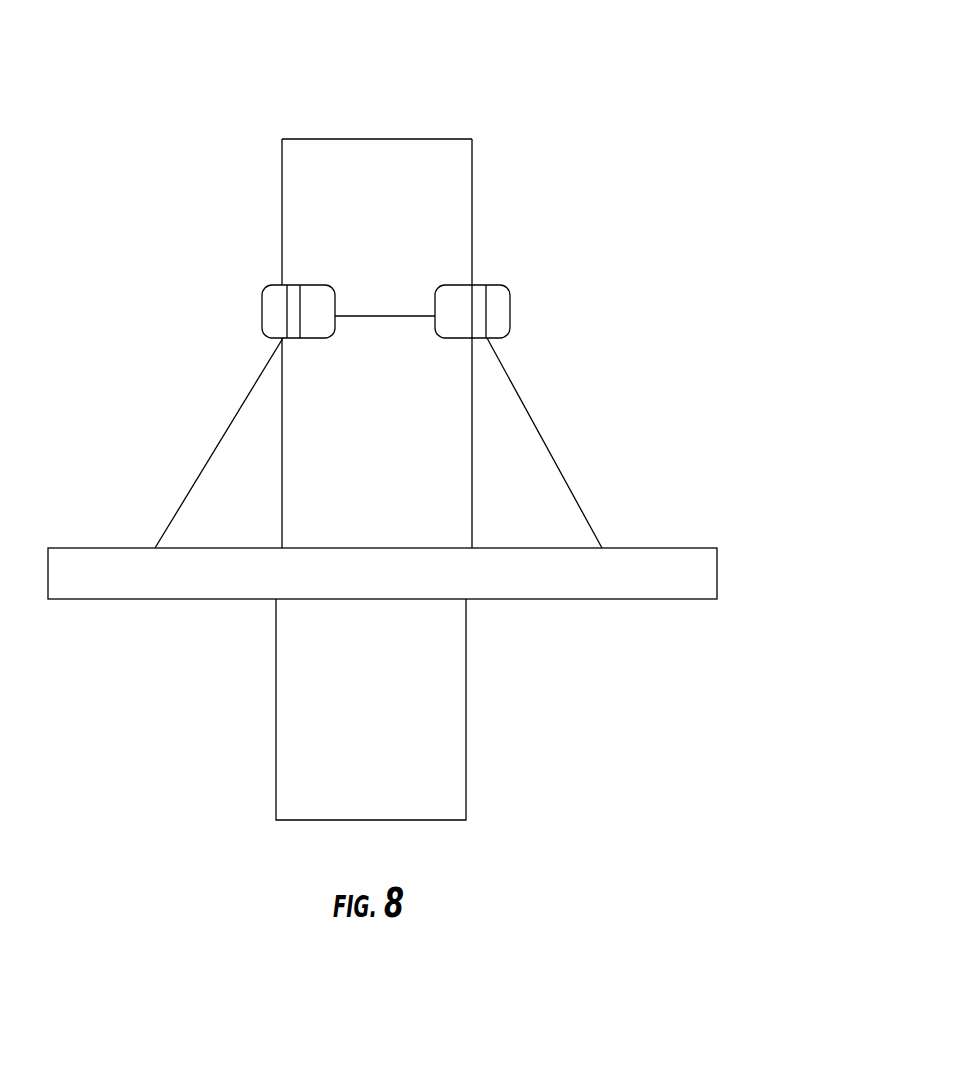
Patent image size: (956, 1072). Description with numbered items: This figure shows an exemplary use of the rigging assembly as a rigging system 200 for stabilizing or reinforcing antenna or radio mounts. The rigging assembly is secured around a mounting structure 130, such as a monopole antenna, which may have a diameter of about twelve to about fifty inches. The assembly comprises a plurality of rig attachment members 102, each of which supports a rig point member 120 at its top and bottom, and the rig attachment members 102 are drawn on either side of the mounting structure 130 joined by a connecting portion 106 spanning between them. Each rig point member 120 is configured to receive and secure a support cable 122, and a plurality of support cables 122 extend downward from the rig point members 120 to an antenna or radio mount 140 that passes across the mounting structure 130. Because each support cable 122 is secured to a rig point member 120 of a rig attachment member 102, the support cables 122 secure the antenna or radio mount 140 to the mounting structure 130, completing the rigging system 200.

The rigging system 200 is at (683, 140).
The mounting structure 130 is at (407, 165).
The antenna or radio mount 140 is at (588, 600).
The rig point member 120 is at (291, 302).
The rig attachment member 102 is at (500, 308).
The connecting bar 106 is at (366, 317).
The support cable 122 is at (202, 468).